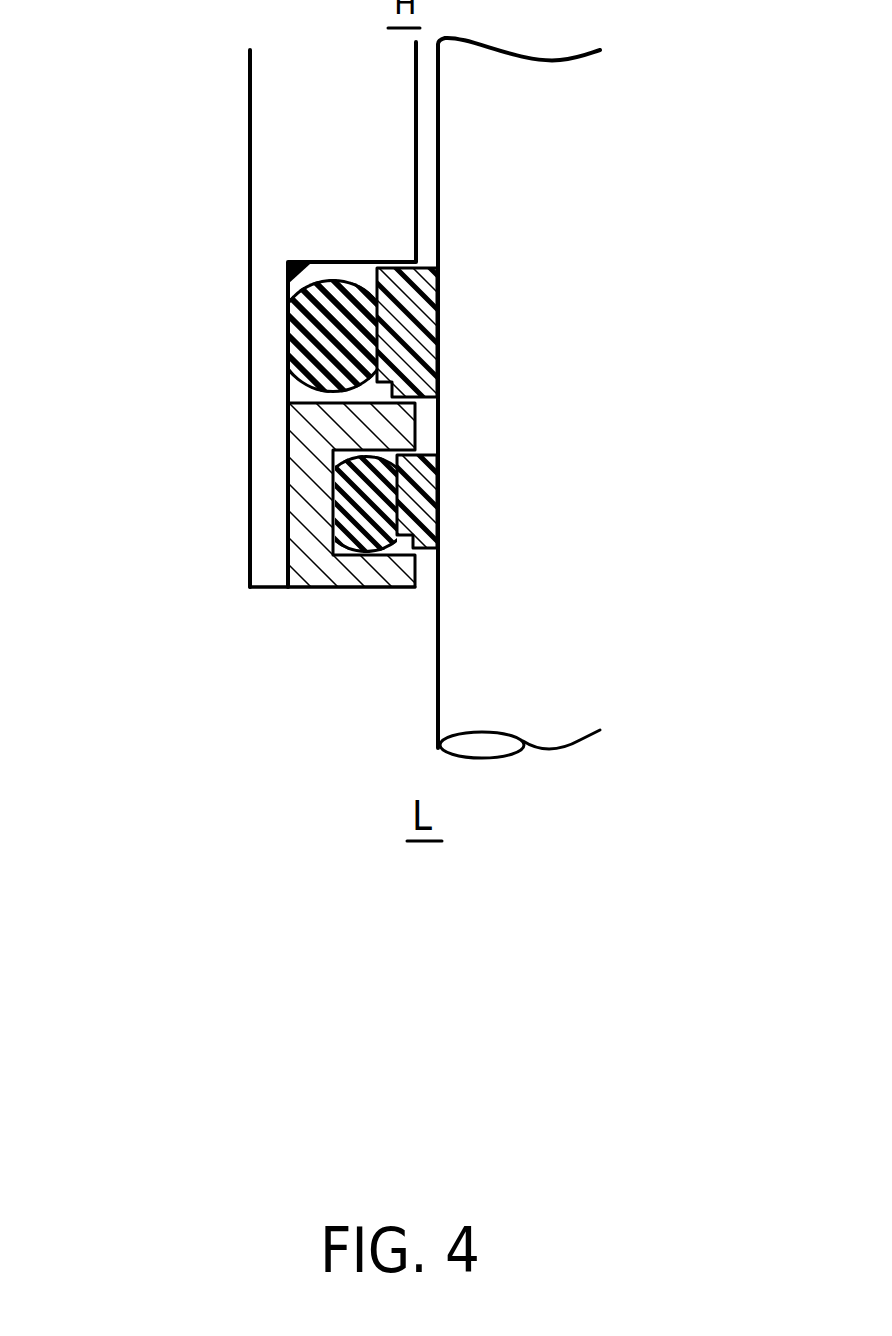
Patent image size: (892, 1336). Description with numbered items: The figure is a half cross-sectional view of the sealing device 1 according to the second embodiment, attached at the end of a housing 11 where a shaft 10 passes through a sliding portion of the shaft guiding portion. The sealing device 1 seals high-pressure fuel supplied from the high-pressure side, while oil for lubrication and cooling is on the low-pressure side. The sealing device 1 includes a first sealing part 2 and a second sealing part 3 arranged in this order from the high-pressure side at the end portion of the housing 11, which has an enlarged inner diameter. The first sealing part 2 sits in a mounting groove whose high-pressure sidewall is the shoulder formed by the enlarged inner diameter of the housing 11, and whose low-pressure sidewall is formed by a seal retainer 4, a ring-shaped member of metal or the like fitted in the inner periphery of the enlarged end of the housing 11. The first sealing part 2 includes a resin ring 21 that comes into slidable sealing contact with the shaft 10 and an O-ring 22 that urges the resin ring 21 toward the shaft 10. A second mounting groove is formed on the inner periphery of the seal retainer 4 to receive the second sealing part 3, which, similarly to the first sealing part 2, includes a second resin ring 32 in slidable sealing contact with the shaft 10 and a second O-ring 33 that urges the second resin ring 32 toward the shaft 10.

The sealing device 1 is at (272, 402).
The first sealing part 2 is at (288, 265).
The resin ring 21 is at (422, 320).
The O-ring 22 is at (330, 345).
The second sealing part 3 is at (312, 521).
The second resin ring 32 is at (420, 497).
The second O-ring 33 is at (355, 475).
The seal retainer 4 is at (300, 563).
The shaft 10 is at (502, 595).
The housing 11 is at (330, 235).